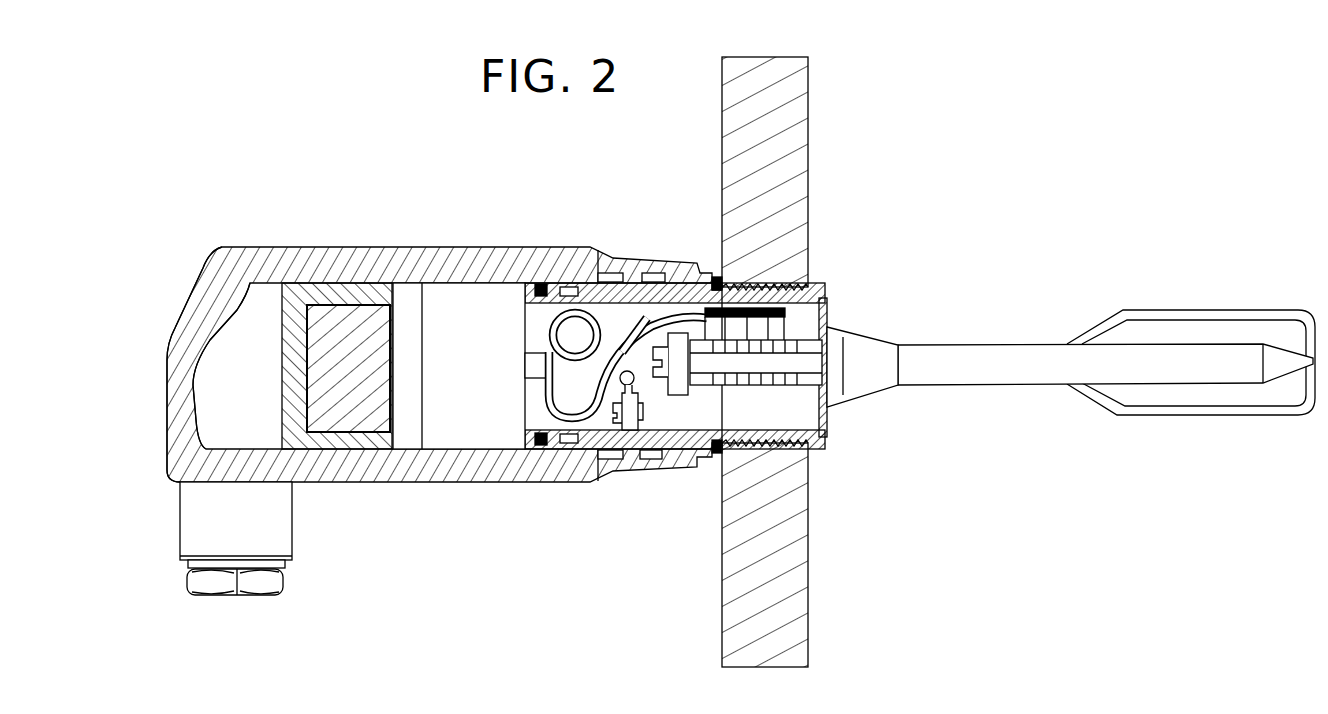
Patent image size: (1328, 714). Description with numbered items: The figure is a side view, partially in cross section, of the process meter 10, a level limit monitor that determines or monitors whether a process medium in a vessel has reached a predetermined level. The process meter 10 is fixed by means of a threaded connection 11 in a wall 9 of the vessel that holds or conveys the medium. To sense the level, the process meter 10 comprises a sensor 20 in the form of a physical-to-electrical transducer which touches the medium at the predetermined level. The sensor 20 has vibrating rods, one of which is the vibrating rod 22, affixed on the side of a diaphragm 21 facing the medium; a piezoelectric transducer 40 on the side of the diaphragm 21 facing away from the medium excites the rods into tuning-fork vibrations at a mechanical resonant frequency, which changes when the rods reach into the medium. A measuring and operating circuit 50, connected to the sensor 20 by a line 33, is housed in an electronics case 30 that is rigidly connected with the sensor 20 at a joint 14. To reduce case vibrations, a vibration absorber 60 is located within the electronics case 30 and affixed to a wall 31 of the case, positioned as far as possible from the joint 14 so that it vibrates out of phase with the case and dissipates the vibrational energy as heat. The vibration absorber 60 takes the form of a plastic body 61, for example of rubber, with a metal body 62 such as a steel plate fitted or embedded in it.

The wall 9 is at (793, 581).
The process meter 10 is at (666, 171).
The threaded connection 11 is at (796, 278).
The joint 14 is at (818, 452).
The sensor 20 is at (1071, 343).
The diaphragm 21 is at (852, 405).
The vibrating rod 22 is at (978, 370).
The electronics case 30 is at (378, 232).
The wall 31 is at (408, 457).
The line 33 is at (635, 308).
The piezoelectric transducer 40 is at (803, 320).
The measuring and operating circuit 50 is at (463, 303).
The vibration absorber 60 is at (260, 320).
The plastic body 61 is at (277, 378).
The metal body 62 is at (323, 313).